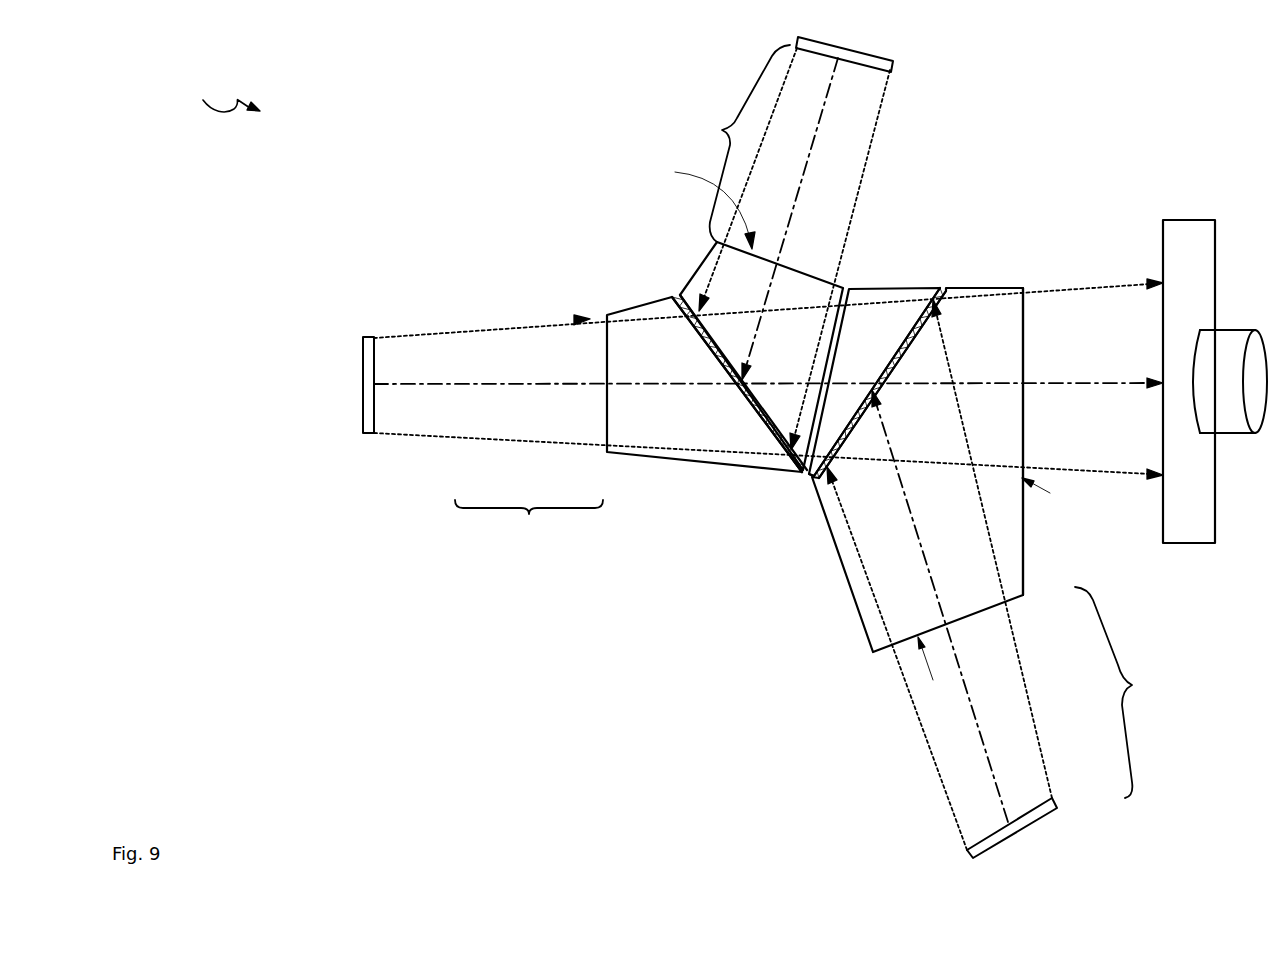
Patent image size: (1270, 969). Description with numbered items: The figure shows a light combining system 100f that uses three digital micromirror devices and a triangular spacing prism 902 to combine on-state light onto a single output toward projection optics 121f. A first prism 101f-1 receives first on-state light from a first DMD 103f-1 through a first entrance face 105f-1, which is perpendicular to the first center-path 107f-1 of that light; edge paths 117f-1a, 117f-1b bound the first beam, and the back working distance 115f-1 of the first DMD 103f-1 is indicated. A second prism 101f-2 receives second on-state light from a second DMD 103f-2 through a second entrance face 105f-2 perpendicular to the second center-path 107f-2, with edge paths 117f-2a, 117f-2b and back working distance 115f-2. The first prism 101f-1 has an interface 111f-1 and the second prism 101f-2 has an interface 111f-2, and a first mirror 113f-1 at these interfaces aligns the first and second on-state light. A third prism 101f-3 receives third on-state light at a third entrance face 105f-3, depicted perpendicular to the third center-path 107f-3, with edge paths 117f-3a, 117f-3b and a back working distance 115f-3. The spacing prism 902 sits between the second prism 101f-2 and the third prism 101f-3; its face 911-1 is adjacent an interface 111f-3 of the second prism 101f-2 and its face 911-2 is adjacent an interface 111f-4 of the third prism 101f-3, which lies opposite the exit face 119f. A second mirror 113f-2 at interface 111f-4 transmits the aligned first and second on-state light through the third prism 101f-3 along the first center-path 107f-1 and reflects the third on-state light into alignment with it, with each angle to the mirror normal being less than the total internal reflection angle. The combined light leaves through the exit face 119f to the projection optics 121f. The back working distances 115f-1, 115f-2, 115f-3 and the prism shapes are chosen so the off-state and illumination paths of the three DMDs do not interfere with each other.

The light combining system 100f is at (216, 93).
The first DMD 103f-1 is at (373, 352).
The second DMD 103f-2 is at (870, 63).
The first entrance face 105f-1 is at (578, 318).
The second entrance face 105f-2 is at (684, 206).
The third entrance face 105f-3 is at (941, 669).
The first center-path 107f-1 is at (493, 387).
The second center-path 107f-2 is at (805, 167).
The third center-path 107f-3 is at (962, 668).
The interface 111f-1 is at (672, 297).
The interface 111f-2 is at (680, 296).
The interface 111f-3 is at (850, 288).
The interface 111f-4 is at (933, 289).
The first mirror 113f-1 is at (688, 294).
The second mirror 113f-2 is at (814, 480).
The back working distance 115f-1 is at (529, 520).
The back working distance 115f-2 is at (720, 143).
The back working distance 115f-3 is at (1135, 692).
The path 117f-1a is at (555, 443).
The path 117f-1b is at (513, 329).
The path 117f-2a is at (881, 105).
The path 117f-2b is at (787, 75).
The path 117f-3a is at (915, 708).
The path 117f-3b is at (1035, 625).
The exit face 119f is at (1062, 441).
The projection optics 121f is at (1215, 381).
The first prism 101f-1 is at (704, 384).
The second prism 101f-2 is at (761, 356).
The third prism 101f-3 is at (917, 470).
The spacing prism 902 is at (874, 382).
The face 911-1 is at (798, 463).
The face 911-2 is at (815, 474).